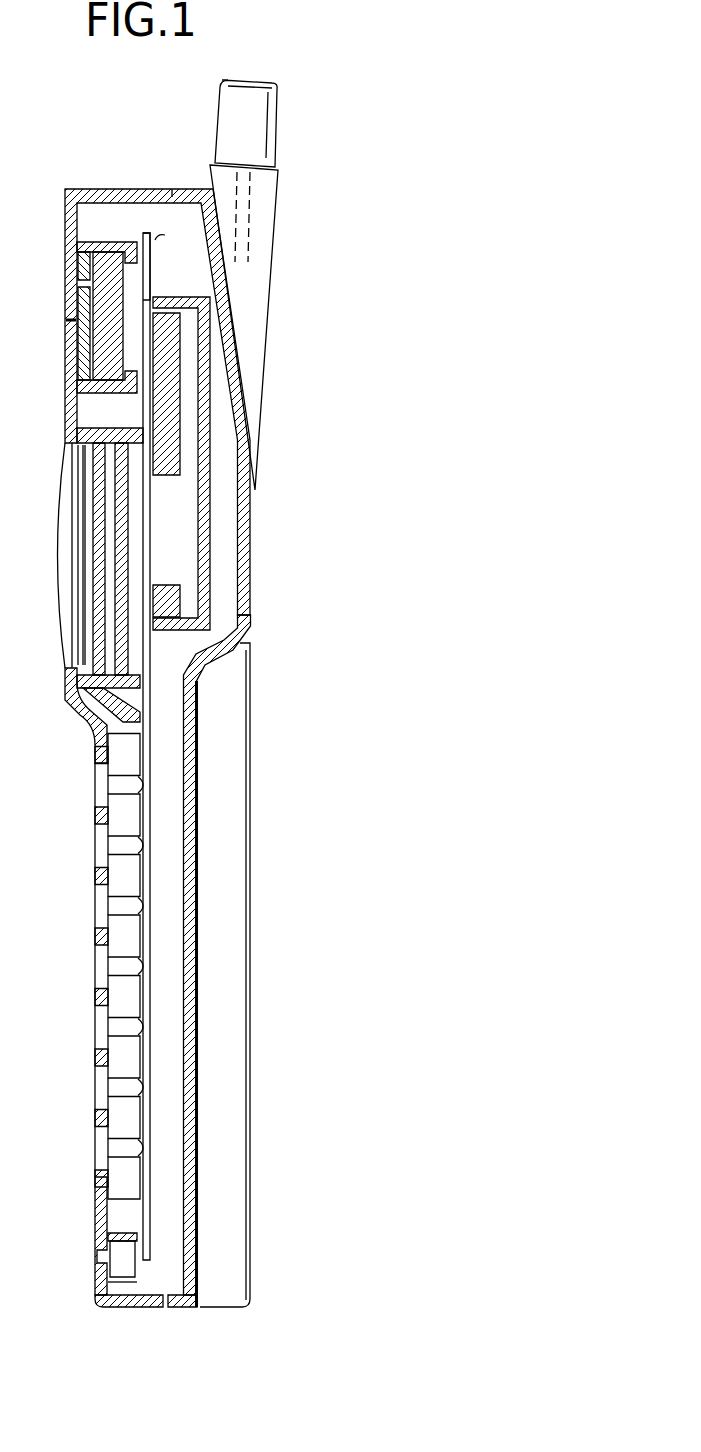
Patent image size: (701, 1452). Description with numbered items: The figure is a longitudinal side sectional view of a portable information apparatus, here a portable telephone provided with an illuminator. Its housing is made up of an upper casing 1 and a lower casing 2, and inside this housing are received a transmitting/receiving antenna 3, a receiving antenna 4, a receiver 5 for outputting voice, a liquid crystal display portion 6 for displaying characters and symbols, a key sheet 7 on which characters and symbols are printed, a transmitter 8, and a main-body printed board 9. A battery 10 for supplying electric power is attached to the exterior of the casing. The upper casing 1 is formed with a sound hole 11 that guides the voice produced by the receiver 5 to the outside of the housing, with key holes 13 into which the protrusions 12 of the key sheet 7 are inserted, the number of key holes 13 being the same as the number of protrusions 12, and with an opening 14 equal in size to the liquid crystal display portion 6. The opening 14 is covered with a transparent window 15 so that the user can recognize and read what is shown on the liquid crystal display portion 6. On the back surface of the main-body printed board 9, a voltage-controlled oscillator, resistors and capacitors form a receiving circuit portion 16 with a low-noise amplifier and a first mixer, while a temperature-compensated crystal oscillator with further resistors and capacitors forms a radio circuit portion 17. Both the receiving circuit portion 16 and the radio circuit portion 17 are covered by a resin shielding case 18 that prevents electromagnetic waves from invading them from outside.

The upper casing 1 is at (70, 194).
The lower casing 2 is at (246, 562).
The transmitting/receiving antenna 3 is at (245, 195).
The receiving antenna 4 is at (154, 232).
The receiver 5 is at (98, 290).
The liquid crystal display portion 6 is at (110, 575).
The key sheet 7 is at (94, 844).
The transmitter 8 is at (115, 1252).
The main-body printed board 9 is at (148, 1213).
The battery 10 is at (246, 1198).
The sound hole 11 is at (73, 322).
The protrusions 12 is at (94, 783).
The key holes 13 is at (98, 937).
The opening 14 is at (76, 516).
The transparent window 15 is at (74, 470).
The receiving circuit portion 16 is at (178, 330).
The radio circuit portion 17 is at (178, 600).
The resin shielding case 18 is at (210, 400).